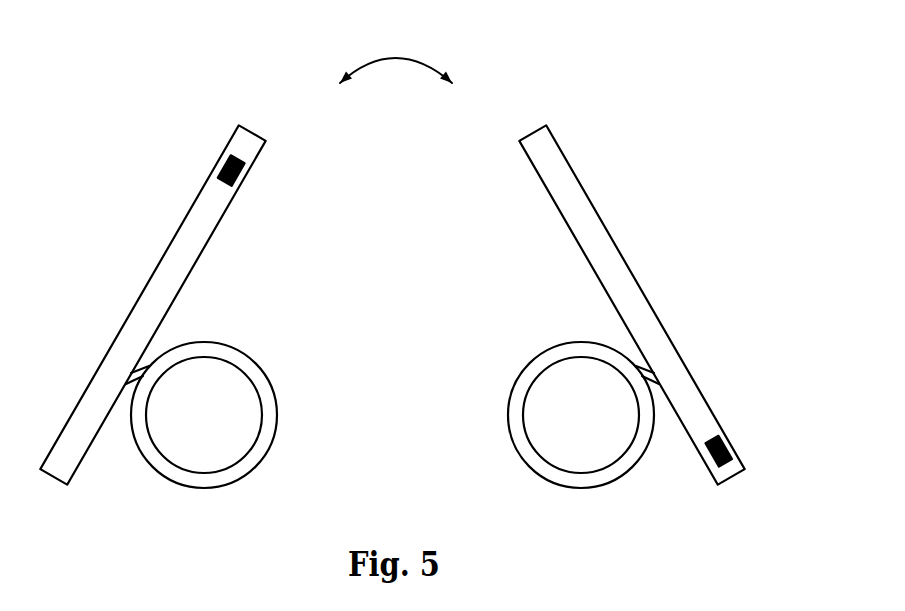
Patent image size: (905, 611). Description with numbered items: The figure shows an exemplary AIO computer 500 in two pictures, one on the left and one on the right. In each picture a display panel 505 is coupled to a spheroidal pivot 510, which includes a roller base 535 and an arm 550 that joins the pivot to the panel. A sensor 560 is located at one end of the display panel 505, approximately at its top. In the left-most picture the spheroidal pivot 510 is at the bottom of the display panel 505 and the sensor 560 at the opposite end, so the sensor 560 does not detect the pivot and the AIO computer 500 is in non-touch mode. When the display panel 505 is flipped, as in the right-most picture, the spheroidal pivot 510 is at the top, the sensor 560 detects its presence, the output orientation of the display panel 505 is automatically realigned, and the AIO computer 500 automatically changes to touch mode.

The AIO computer 500 is at (78, 68).
The display panel 505 is at (193, 202).
The spheroidal pivot 510 is at (252, 352).
The roller base 535 is at (275, 440).
The arm 550 is at (143, 370).
The sensor 560 is at (240, 173).